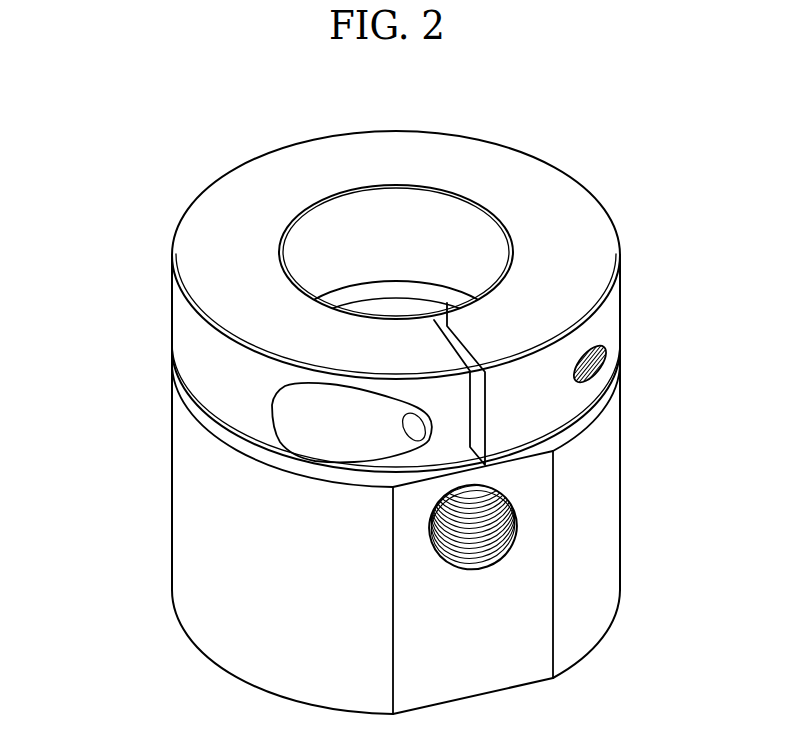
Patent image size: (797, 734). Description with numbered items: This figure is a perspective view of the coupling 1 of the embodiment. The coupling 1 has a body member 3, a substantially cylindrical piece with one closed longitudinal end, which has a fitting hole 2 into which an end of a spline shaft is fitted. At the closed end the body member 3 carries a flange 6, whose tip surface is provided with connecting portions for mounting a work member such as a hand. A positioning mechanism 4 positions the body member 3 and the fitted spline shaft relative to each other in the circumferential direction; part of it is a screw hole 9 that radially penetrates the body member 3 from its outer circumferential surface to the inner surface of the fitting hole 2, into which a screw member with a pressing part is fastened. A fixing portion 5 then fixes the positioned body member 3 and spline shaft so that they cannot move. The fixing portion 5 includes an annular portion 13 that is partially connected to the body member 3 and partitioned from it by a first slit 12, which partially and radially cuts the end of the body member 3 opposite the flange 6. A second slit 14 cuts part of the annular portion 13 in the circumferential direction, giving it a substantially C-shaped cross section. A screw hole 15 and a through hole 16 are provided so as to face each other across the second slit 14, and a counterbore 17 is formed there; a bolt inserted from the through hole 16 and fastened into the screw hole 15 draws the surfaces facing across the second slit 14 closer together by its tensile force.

The coupling 1 is at (379, 390).
The fitting hole 2 is at (357, 227).
The body member 3 is at (411, 538).
The positioning mechanism 4 is at (434, 332).
The fixing portion 5 is at (345, 440).
The flange 6 is at (590, 586).
The screw hole 9 is at (493, 516).
The first slit 12 is at (204, 424).
The annular portion 13 is at (247, 203).
The second slit 14 is at (437, 312).
The screw hole 15 is at (597, 353).
The through hole 16 is at (413, 424).
The counterbore 17 is at (300, 425).